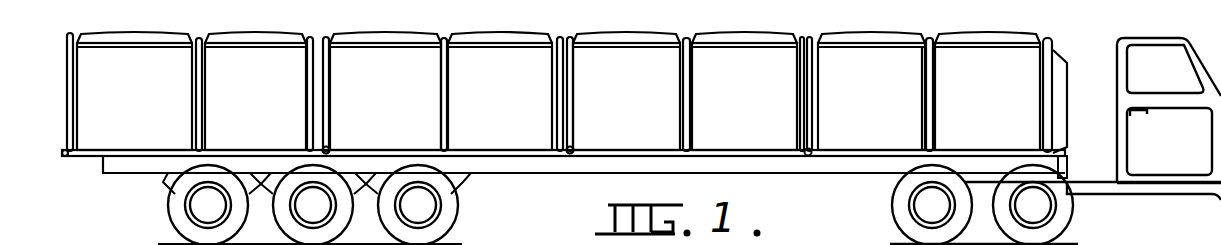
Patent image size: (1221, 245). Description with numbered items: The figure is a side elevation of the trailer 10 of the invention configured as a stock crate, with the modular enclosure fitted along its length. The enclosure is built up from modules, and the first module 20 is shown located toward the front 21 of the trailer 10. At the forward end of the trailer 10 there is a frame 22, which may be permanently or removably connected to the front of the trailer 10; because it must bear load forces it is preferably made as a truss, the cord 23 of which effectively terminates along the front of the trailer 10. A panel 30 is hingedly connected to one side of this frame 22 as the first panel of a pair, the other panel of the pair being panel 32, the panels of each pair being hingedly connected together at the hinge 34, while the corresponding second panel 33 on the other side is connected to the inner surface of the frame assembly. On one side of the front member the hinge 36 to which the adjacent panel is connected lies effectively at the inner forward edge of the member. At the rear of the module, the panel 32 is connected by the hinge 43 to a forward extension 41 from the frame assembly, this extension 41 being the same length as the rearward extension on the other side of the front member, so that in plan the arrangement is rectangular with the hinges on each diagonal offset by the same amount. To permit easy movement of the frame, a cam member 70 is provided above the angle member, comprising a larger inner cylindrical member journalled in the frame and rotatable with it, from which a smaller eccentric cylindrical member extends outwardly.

The trailer 10 is at (583, 137).
The first module 20 is at (1055, 141).
The front 21 is at (1065, 166).
The frame 22 is at (1094, 78).
The cord 23 is at (1052, 66).
The panel 30 is at (998, 130).
The panel 32 is at (886, 86).
The panel 33 is at (866, 190).
The hinge 34 is at (924, 105).
The hinge 36 is at (1044, 72).
The forward extension 41 is at (802, 58).
The hinge 43 is at (812, 102).
The cam member 70 is at (322, 147).